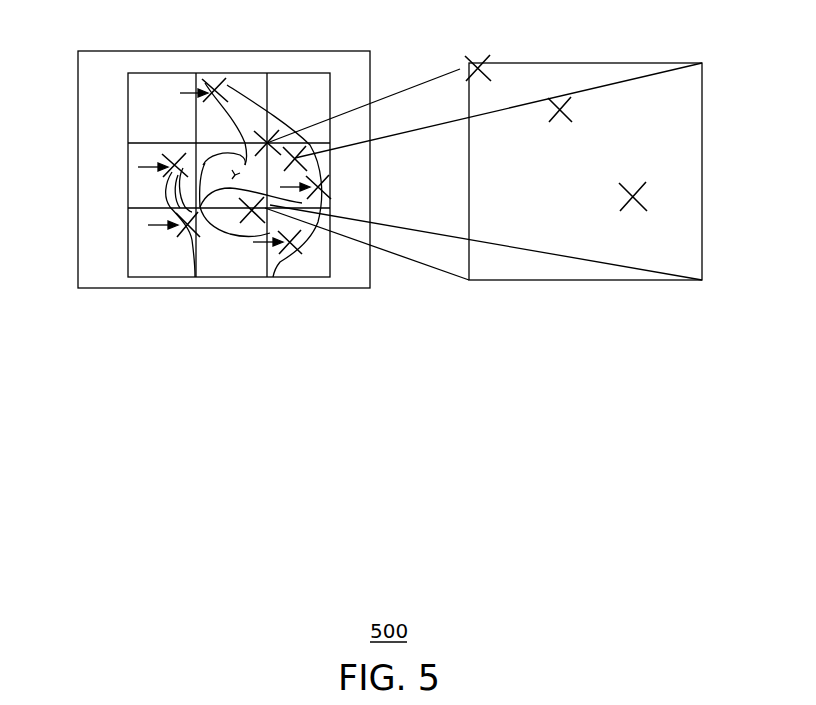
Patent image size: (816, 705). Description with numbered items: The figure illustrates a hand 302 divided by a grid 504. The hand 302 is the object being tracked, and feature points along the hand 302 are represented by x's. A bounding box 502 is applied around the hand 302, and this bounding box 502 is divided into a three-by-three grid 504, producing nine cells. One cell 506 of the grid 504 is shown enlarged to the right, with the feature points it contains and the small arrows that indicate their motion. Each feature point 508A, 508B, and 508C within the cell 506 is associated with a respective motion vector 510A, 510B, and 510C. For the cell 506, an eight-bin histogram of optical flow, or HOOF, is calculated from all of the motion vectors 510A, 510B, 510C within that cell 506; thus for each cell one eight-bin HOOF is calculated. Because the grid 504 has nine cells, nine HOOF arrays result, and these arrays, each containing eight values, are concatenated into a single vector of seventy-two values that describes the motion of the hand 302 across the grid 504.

The hand 302 is at (214, 257).
The bounding box 502 is at (231, 280).
The grid 504 is at (284, 82).
The cell 506 is at (459, 155).
The feature point 508A is at (492, 64).
The feature point 508B is at (576, 113).
The feature point 508C is at (645, 203).
The motion vector 510A is at (460, 66).
The motion vector 510B is at (544, 110).
The motion vector 510C is at (618, 195).